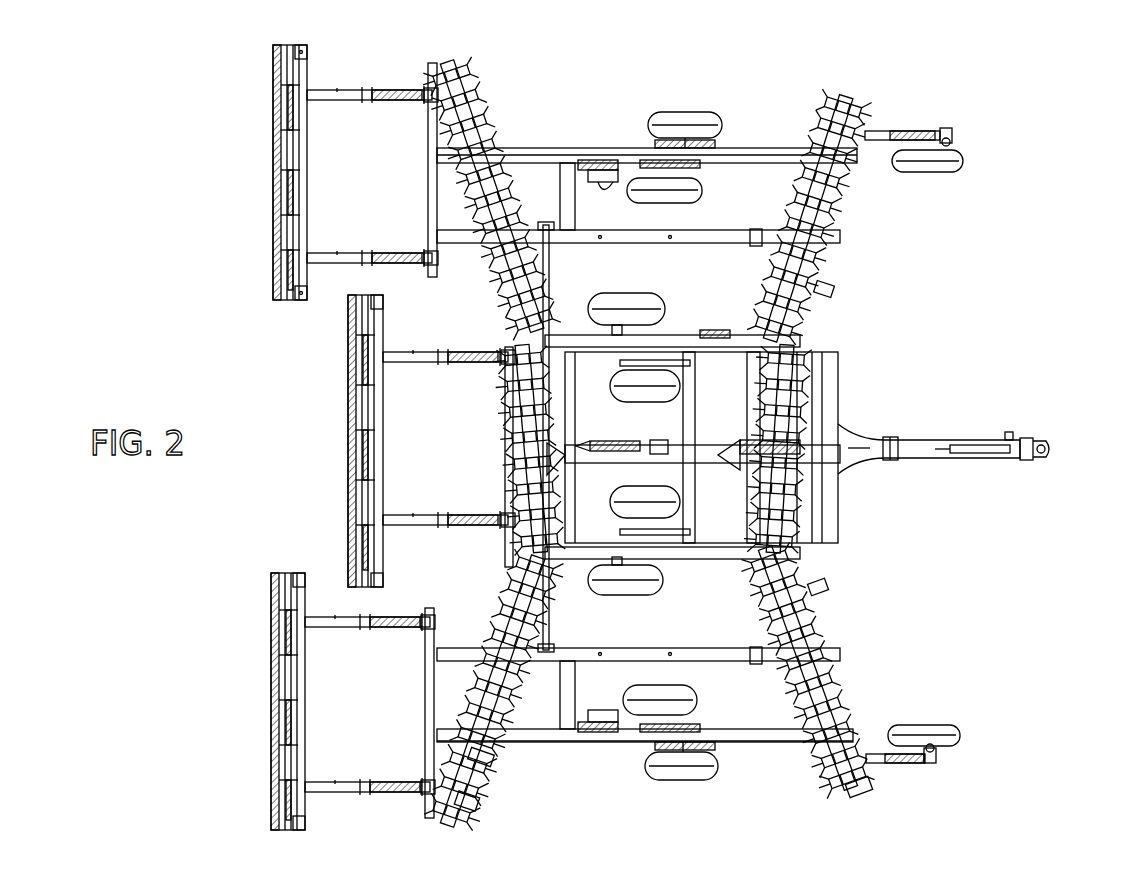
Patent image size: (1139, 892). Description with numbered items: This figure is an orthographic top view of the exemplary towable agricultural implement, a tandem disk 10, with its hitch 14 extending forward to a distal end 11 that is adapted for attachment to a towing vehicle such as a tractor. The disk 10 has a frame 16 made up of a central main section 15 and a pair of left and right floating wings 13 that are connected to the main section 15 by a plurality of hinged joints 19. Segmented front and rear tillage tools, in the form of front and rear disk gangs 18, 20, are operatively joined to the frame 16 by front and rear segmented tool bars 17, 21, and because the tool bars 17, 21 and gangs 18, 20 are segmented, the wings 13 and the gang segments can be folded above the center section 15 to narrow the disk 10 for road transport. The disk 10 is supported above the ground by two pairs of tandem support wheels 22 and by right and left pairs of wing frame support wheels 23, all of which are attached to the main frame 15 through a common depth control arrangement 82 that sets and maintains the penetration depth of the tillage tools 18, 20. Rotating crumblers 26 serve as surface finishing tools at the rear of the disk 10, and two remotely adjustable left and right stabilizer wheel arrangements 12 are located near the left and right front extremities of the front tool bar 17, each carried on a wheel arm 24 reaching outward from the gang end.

The tandem disk 10 is at (600, 74).
The distal end 11 is at (1050, 444).
The stabilizer wheel arrangement 12 is at (968, 144).
The floating wing 13 is at (801, 148).
The hitch 14 is at (918, 440).
The central main section 15 is at (683, 345).
The frame 16 is at (770, 158).
The front segmented tool bar 17 is at (795, 325).
The front disk gang 18 is at (868, 790).
The hinged joint 19 is at (816, 288).
The rear disk gang 20 is at (468, 798).
The rear segmented tool bar 21 is at (480, 755).
The tandem support wheel 22 is at (632, 300).
The wing frame support wheel 23 is at (683, 120).
The wheel arm 24 is at (900, 132).
The rotating crumbler 26 is at (323, 435).
The depth control arrangement 82 is at (600, 160).